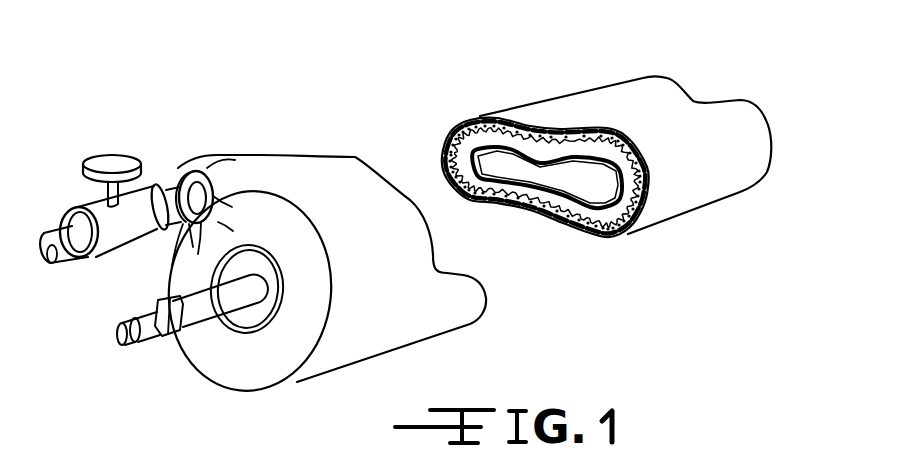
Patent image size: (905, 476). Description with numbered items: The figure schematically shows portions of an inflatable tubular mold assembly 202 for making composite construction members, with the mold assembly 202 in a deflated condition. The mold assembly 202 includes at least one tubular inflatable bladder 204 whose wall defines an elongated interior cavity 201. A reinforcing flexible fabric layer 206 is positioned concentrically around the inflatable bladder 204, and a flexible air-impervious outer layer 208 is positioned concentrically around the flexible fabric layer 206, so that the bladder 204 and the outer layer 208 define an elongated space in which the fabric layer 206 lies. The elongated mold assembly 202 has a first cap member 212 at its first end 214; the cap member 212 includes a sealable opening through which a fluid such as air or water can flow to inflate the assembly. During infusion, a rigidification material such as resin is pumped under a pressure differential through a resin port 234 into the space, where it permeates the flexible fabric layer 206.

The interior cavity 201 is at (593, 170).
The inflatable tubular mold assembly 202 is at (553, 170).
The inflatable bladder 204 is at (513, 145).
The flexible fabric layer 206 is at (620, 162).
The air-impervious outer layer 208 is at (652, 188).
The first cap member 212 is at (216, 347).
The first end 214 is at (376, 353).
The resin port 234 is at (164, 184).